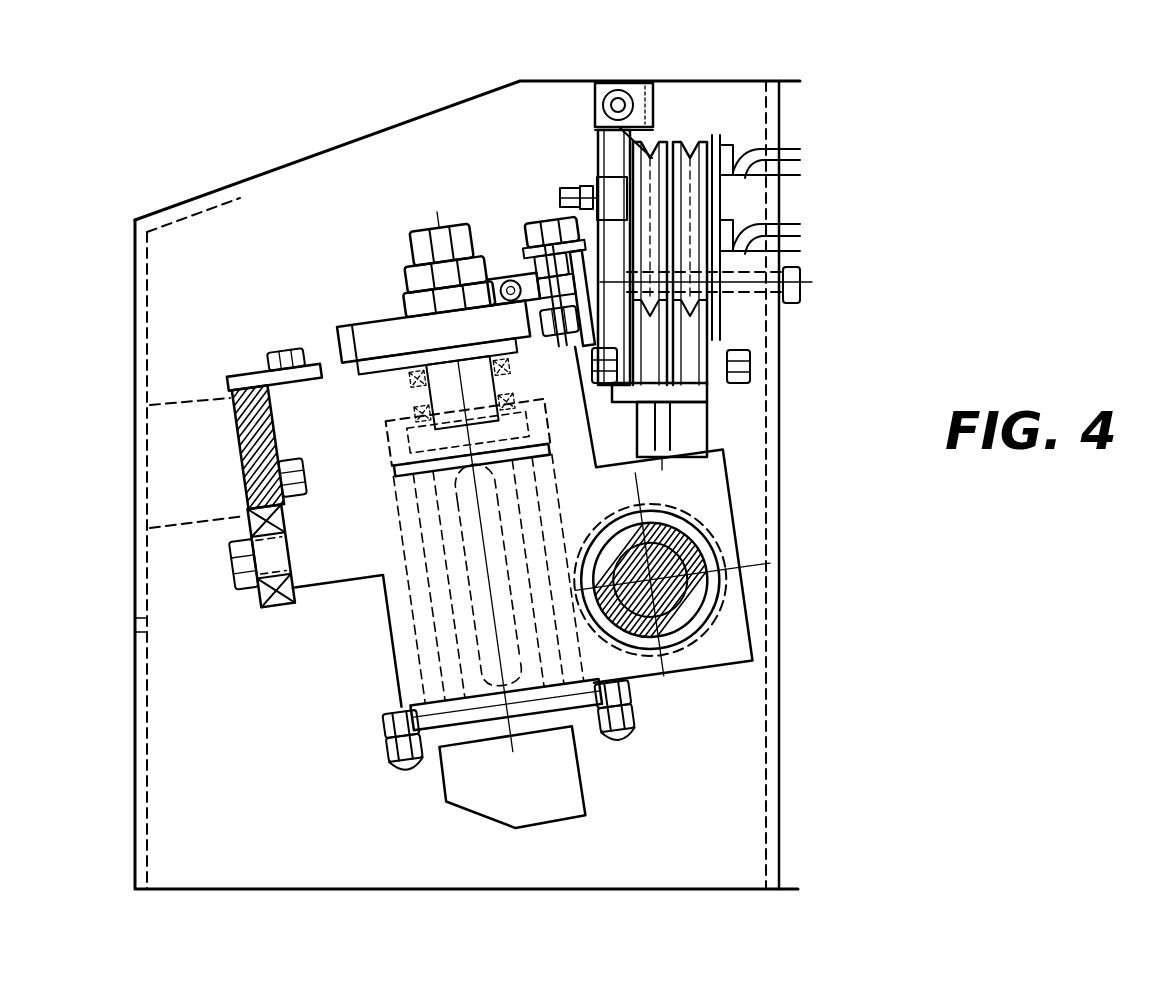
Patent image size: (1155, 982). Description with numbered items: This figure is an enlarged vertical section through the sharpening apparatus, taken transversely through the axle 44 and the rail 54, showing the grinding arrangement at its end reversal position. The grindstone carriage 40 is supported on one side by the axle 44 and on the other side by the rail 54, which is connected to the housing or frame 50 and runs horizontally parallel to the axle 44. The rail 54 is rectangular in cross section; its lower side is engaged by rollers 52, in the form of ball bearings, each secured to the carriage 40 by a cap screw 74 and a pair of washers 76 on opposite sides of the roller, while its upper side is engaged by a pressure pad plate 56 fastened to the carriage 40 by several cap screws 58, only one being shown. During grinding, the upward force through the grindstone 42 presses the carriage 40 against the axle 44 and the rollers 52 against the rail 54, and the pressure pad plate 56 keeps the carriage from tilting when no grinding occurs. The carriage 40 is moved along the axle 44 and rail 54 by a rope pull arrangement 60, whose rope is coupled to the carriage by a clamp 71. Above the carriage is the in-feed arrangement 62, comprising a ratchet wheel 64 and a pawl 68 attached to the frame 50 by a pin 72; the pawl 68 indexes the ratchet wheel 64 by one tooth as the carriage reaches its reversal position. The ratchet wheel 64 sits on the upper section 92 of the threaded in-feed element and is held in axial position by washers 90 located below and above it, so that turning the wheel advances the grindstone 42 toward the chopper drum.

The grindstone carriage 40 is at (367, 558).
The grindstone 42 is at (555, 820).
The axle 44 is at (690, 655).
The housing or frame 50 is at (147, 519).
The rollers 52 is at (265, 605).
The rail 54 is at (237, 462).
The pressure pad plate 56 is at (240, 378).
The cap screws 58 is at (282, 350).
The rope pull arrangement 60 is at (696, 107).
The in-feed arrangement 62 is at (484, 158).
The ratchet wheel 64 is at (390, 330).
The pawl 68 is at (500, 262).
The clamp 71 is at (705, 405).
The pin 72 is at (546, 222).
The cap screw 74 is at (237, 556).
The washers 76 is at (247, 590).
The washers 90 is at (388, 322).
The upper section 92 is at (452, 226).